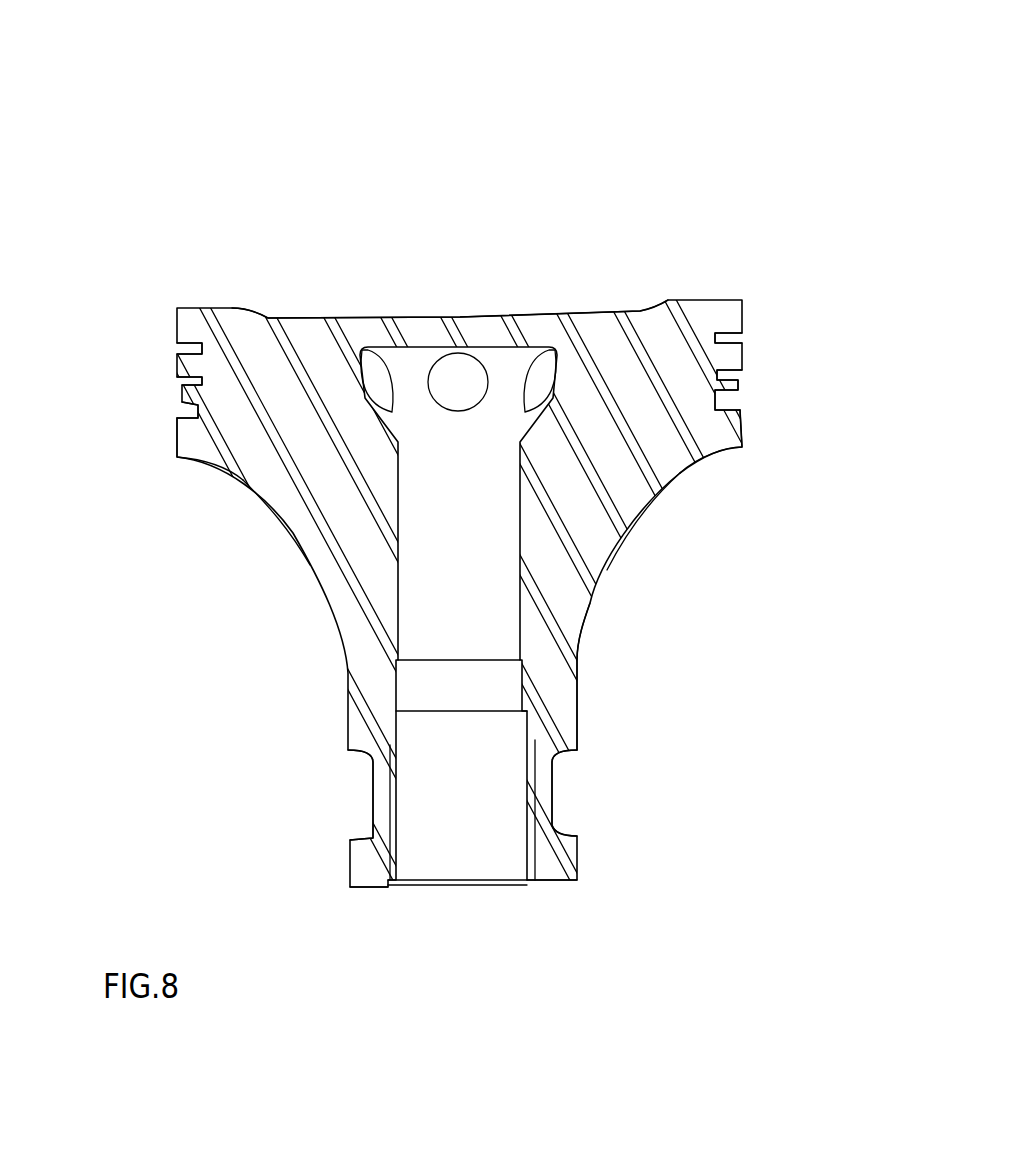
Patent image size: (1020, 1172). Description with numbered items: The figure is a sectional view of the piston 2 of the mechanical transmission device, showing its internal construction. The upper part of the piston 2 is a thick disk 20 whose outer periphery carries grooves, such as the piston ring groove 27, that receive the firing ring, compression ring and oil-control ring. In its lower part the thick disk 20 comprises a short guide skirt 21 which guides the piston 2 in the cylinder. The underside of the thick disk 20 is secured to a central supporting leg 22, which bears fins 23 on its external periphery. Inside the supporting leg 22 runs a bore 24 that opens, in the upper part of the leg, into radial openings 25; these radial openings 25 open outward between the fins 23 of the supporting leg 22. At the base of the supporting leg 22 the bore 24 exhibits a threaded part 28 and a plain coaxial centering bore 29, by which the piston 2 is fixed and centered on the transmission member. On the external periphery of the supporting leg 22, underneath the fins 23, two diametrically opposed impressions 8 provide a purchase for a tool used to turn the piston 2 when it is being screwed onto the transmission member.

The piston 2 is at (628, 184).
The thick disk 20 is at (707, 298).
The guide skirt 21 is at (177, 457).
The supporting leg 22 is at (584, 634).
The fins 23 is at (307, 522).
The bore 24 is at (503, 857).
The radial openings 25 is at (378, 382).
The piston ring groove 27 is at (197, 404).
The threaded part 28 is at (398, 775).
The plain coaxial centering bore 29 is at (402, 693).
The impressions 8 is at (370, 817).